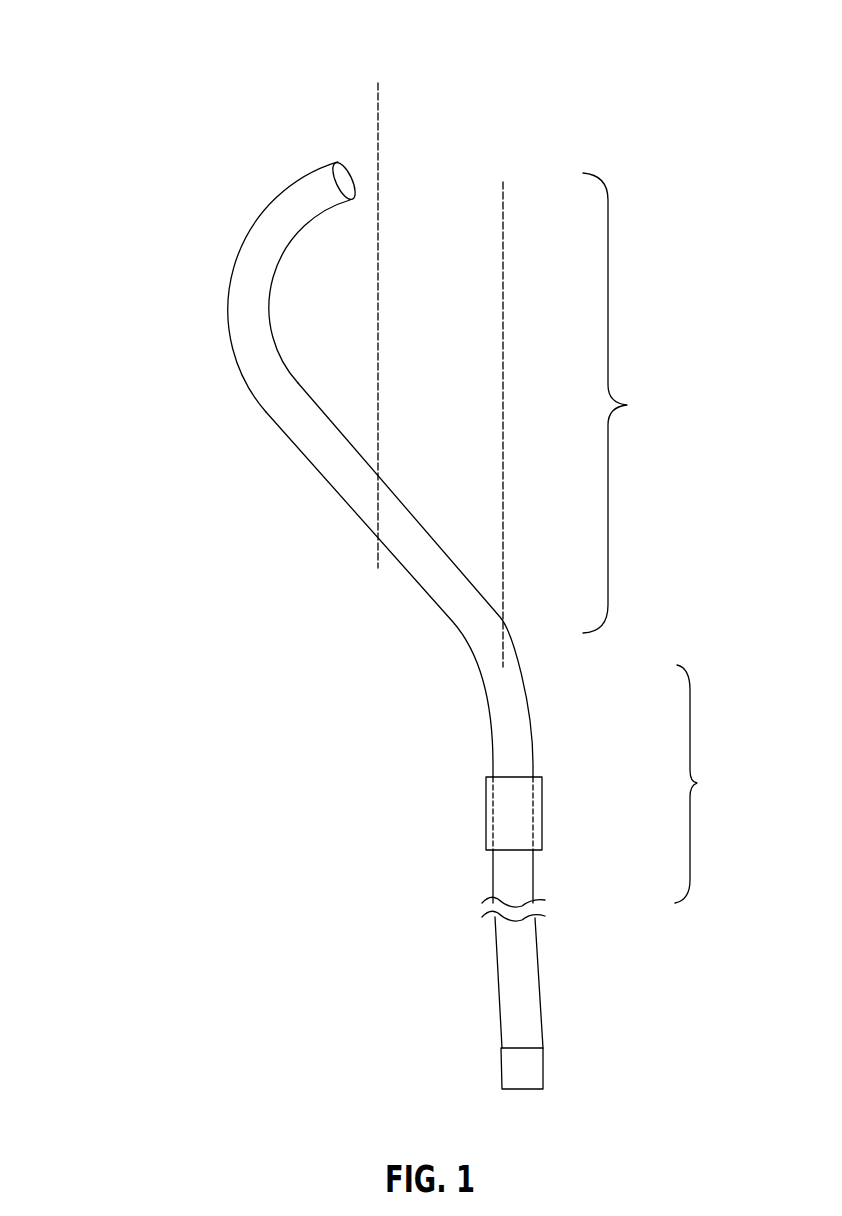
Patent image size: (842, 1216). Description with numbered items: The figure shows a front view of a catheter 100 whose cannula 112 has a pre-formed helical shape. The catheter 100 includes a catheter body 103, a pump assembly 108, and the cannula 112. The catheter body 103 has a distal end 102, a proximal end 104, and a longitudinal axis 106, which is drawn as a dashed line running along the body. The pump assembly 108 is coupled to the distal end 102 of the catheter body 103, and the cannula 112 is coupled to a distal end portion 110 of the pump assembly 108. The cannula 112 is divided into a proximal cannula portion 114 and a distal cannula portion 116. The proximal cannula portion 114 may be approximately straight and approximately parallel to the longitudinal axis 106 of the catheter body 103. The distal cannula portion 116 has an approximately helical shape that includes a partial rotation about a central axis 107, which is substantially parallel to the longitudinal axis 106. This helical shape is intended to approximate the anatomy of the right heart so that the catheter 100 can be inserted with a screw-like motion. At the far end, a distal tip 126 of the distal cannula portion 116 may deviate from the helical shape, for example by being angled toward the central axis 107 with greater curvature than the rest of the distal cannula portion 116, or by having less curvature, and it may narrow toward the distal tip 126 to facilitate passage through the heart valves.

The catheter 100 is at (170, 85).
The distal end 102 is at (523, 892).
The catheter body 103 is at (498, 1017).
The proximal end 104 is at (543, 1003).
The longitudinal axis 106 is at (503, 230).
The central axis 107 is at (380, 102).
The pump assembly 108 is at (490, 822).
The distal end portion 110 is at (487, 777).
The cannula 112 is at (228, 312).
The proximal cannula portion 114 is at (711, 784).
The distal cannula portion 116 is at (631, 403).
The distal tip 126 is at (247, 118).